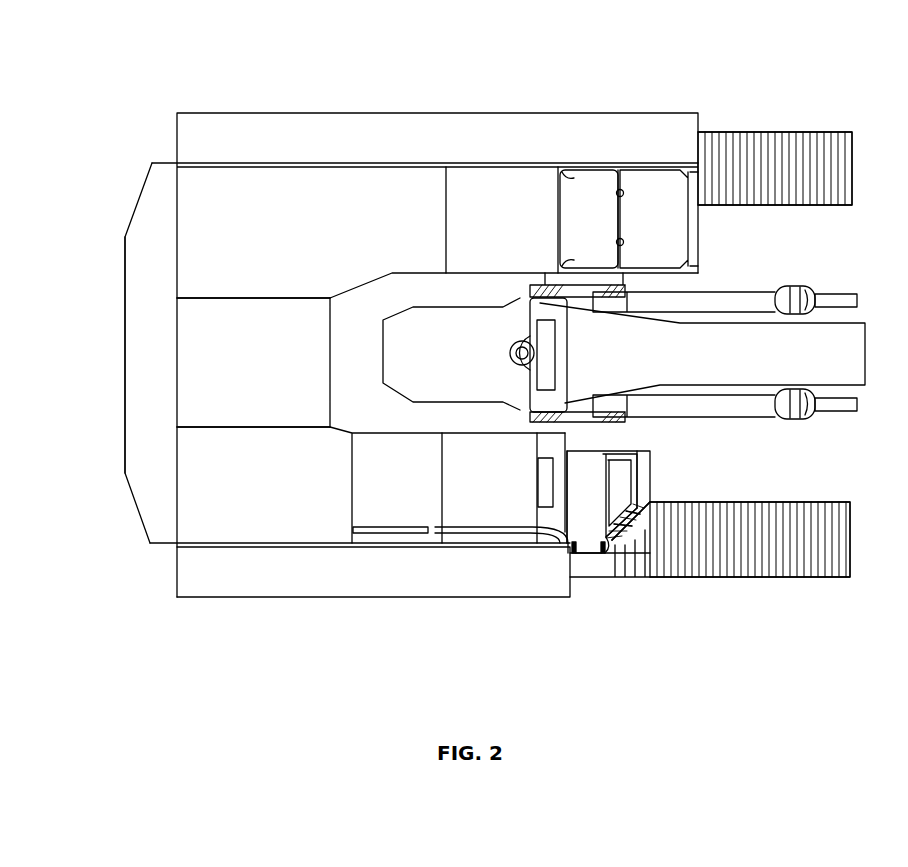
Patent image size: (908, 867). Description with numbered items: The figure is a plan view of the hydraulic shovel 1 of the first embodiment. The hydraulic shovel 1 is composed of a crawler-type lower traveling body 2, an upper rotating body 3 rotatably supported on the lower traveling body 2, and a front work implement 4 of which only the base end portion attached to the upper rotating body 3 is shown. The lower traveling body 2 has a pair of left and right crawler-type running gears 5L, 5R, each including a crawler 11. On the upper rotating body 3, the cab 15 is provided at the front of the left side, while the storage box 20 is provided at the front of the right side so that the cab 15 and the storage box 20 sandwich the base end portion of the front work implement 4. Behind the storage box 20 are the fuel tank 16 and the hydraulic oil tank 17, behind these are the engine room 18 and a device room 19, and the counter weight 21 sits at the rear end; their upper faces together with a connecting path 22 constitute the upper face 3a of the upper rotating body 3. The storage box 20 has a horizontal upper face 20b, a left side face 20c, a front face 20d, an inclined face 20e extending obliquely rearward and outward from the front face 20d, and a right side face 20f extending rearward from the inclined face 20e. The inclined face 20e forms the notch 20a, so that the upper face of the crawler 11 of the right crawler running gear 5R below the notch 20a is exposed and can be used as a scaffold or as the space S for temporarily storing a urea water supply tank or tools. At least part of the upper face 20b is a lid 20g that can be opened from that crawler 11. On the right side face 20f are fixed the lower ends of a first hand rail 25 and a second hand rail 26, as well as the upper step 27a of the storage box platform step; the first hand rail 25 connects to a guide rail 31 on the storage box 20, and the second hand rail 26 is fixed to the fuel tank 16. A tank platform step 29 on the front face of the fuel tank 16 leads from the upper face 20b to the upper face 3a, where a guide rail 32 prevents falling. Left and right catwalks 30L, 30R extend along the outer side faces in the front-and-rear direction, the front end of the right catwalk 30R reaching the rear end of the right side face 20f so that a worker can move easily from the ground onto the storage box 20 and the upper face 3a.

The hydraulic shovel 1 is at (432, 75).
The lower traveling body 2 is at (857, 126).
The upper rotating body 3 is at (240, 96).
The upper face of the upper rotating body 3a is at (204, 483).
The front work implement 4 is at (720, 353).
The left crawler-type running gear 5L is at (787, 129).
The right crawler-type running gear 5R is at (820, 580).
The crawler 11 is at (733, 158).
The cab 15 is at (591, 185).
The fuel tank 16 is at (484, 507).
The hydraulic oil tank 17 is at (395, 512).
The engine room 18 is at (217, 372).
The device room 19 is at (297, 190).
The storage box 20 is at (610, 449).
The notch 20a is at (650, 505).
The upper face of the storage box 20b is at (632, 528).
The left side face 20c is at (583, 447).
The front face 20d is at (648, 471).
The inclined face 20e is at (642, 515).
The right side face 20f is at (601, 556).
The lid 20g is at (638, 462).
The counter weight 21 is at (150, 296).
The path 22 is at (355, 330).
The first hand rail 25 is at (622, 542).
The second hand rail 26 is at (562, 548).
The upper step 27a is at (576, 556).
The tank platform step 29 is at (537, 507).
The left catwalk 30L is at (487, 133).
The right catwalk 30R is at (280, 577).
The guide rail 31 is at (650, 484).
The guide rail 32 is at (375, 513).
The space S is at (638, 528).